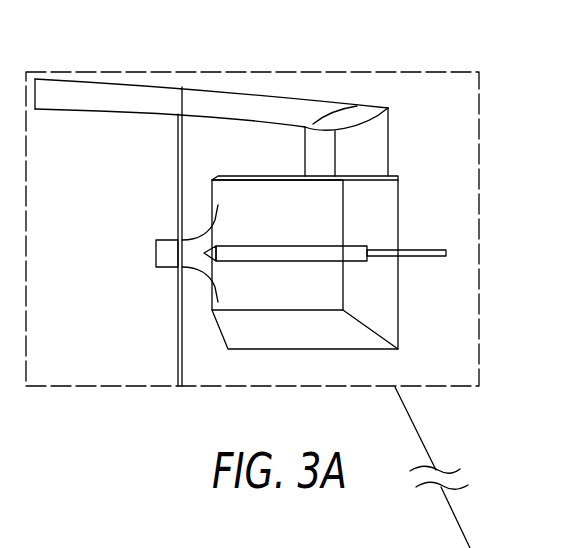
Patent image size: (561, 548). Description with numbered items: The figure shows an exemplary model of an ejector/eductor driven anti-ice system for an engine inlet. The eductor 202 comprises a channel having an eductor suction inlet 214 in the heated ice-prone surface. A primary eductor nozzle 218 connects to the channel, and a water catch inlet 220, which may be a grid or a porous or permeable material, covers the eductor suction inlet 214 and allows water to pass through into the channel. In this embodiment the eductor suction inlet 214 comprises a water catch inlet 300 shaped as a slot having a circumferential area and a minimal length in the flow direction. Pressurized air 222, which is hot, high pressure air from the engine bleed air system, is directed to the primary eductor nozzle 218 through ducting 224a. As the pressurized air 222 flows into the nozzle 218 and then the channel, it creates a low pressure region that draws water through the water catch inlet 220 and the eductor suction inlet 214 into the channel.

The eductor 202 is at (210, 393).
The water catch inlet 300 is at (358, 115).
The water catch inlet 220 is at (378, 147).
The eductor suction inlet 214 is at (382, 208).
The primary eductor nozzle 218 is at (360, 249).
The ducting 224a is at (414, 258).
The pressurized air 222 is at (464, 252).